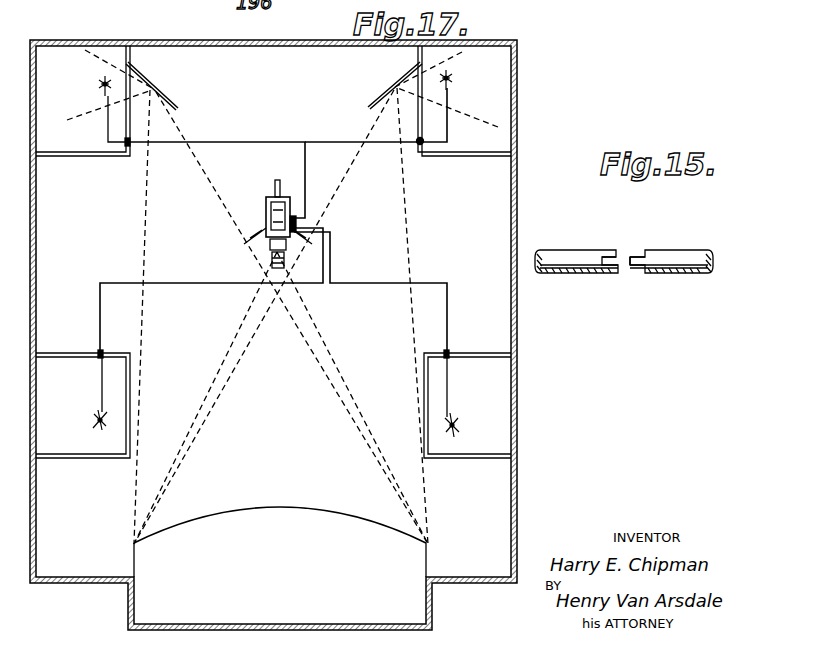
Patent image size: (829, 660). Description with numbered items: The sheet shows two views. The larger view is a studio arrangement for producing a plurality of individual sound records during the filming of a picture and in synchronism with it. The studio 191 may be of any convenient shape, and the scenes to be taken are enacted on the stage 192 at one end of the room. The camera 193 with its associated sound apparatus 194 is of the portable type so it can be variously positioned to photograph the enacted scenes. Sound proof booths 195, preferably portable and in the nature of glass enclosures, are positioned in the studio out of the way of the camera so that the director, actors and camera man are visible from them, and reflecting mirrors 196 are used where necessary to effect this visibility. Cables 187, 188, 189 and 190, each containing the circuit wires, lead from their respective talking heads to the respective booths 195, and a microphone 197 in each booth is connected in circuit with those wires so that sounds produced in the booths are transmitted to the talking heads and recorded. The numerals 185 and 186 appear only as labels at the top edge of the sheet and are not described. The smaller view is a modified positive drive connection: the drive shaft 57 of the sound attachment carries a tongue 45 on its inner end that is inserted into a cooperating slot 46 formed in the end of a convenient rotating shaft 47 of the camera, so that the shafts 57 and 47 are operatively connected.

In FIG. 17, the studio 191 is at (518, 196).
In FIG. 17, the stage 192 is at (327, 517).
In FIG. 17, the projector 193 is at (266, 210).
In FIG. 17, the camera with associated sound apparatus 194 is at (296, 222).
In FIG. 17, the sound proof booths 195 is at (88, 153).
In FIG. 17, the reflecting mirrors 196 is at (166, 98).
In FIG. 17, the microphone 197 is at (99, 83).
In FIG. 17, the cable 187 is at (333, 134).
In FIG. 17, the cable 188 is at (238, 142).
In FIG. 17, the cable 189 is at (377, 282).
In FIG. 17, the cable 190 is at (202, 281).
In FIG. 17, the element of figure above (clipped) 185 is at (160, 0).
In FIG. 17, the element of figure above (clipped) 186 is at (364, 9).
In FIG. 15, the tongue 45 is at (635, 264).
In FIG. 15, the slot 46 is at (610, 265).
In FIG. 15, the rotating shaft of the camera 47 is at (580, 270).
In FIG. 15, the drive shaft 57 is at (687, 267).